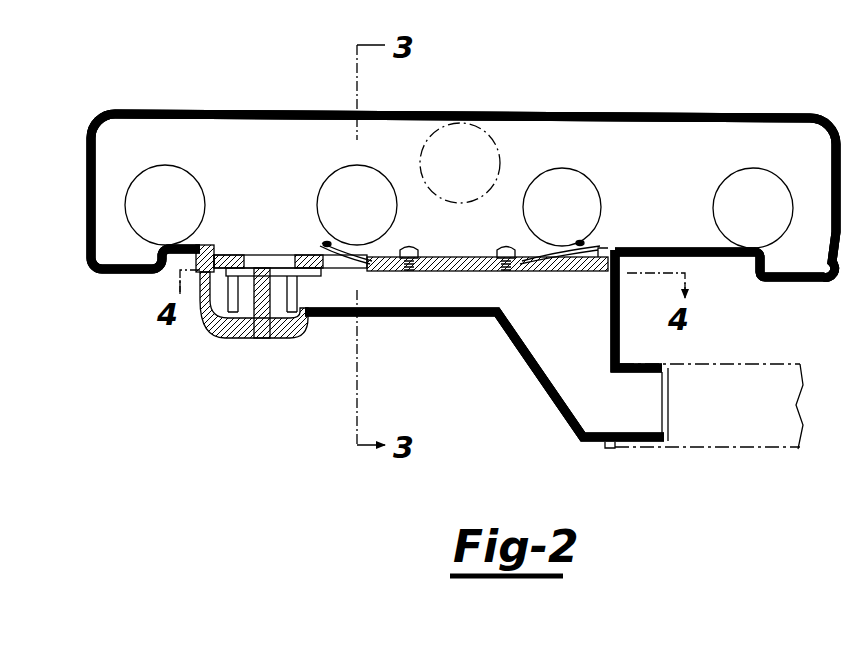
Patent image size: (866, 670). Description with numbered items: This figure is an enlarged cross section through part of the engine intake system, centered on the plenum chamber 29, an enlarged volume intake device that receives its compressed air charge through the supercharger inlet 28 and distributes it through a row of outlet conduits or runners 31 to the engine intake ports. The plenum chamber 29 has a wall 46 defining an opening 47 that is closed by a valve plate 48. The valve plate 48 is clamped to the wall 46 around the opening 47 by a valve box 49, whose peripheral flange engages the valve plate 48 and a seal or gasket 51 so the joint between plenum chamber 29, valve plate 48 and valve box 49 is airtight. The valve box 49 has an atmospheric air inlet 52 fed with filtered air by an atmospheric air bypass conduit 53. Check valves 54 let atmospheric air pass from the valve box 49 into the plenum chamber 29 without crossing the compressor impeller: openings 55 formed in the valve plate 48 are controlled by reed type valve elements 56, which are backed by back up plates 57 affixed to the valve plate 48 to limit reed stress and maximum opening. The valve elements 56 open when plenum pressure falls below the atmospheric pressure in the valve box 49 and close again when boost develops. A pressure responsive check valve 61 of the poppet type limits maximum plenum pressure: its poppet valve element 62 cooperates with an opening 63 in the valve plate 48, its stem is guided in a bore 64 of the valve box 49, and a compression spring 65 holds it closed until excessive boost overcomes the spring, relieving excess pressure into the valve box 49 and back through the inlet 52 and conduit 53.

The supercharger inlet 28 is at (452, 143).
The plenum chamber 29 is at (700, 110).
The runners 31 is at (188, 175).
The wall 46 is at (690, 247).
The opening 47 is at (600, 247).
The valve plate 48 is at (457, 257).
The valve box 49 is at (530, 376).
The seal or gasket 51 is at (628, 250).
The atmospheric air inlet 52 is at (652, 415).
The atmospheric air bypass conduit 53 is at (730, 447).
The check valves 54 is at (366, 290).
The openings 55 is at (365, 271).
The reed type valve elements 56 is at (328, 247).
The back up plates 57 is at (340, 246).
The pressure responsive check valve 61 is at (262, 236).
The poppet valve element 62 is at (259, 255).
The opening 63 is at (243, 254).
The bore 64 is at (261, 338).
The compression spring 65 is at (204, 322).